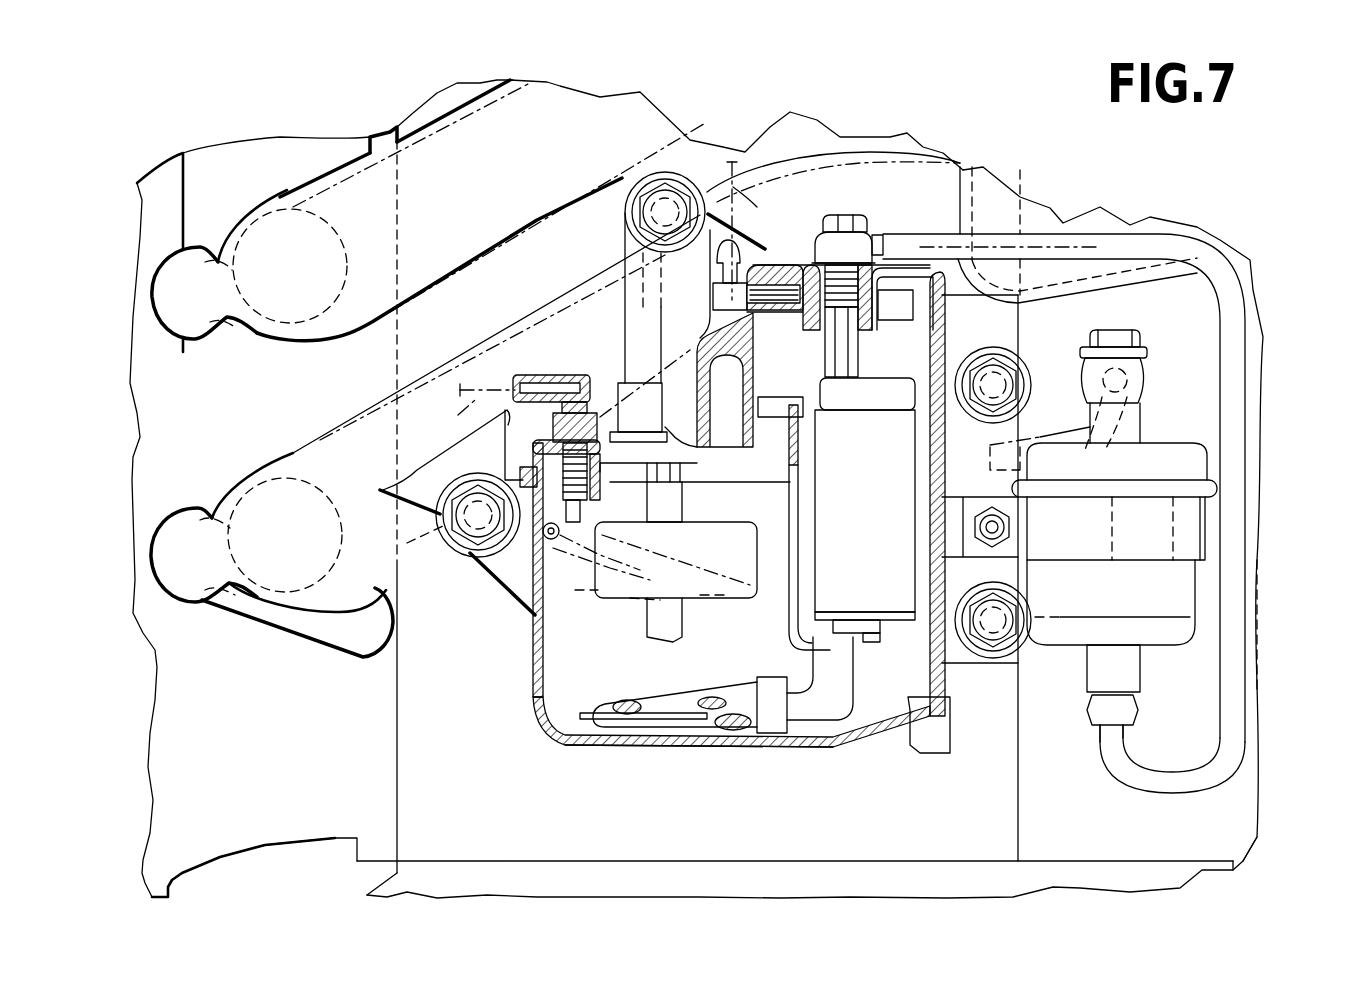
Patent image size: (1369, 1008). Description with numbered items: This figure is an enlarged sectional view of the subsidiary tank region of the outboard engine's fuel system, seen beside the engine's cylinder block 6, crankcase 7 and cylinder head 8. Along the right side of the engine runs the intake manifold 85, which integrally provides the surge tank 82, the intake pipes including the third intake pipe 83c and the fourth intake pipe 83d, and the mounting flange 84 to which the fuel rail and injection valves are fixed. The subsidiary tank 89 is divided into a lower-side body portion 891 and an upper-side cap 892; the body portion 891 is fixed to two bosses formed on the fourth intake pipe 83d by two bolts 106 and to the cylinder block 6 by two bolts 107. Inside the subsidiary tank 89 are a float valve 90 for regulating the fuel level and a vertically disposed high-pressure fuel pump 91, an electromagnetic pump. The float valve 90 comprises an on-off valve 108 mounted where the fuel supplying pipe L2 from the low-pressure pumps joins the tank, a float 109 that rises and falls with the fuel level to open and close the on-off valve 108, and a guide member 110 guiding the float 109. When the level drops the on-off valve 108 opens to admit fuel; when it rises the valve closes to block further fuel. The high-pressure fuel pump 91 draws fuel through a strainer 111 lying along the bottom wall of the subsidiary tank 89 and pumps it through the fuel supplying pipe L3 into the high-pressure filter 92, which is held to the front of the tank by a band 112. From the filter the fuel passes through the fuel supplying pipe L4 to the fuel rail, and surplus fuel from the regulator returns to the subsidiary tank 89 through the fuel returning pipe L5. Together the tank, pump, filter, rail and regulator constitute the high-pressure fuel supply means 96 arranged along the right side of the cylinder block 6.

The cylinder block 6 is at (817, 847).
The crankcase 7 is at (1193, 843).
The cylinder head 8 is at (302, 823).
The surge tank 82 is at (990, 177).
The third intake pipe 83c is at (483, 127).
The fourth intake pipe 83d is at (487, 365).
The mounting flange 84 is at (192, 453).
The intake manifold 85 is at (433, 118).
The subsidiary tank 89 is at (547, 710).
The body portion 891 is at (825, 740).
The cap 892 is at (943, 355).
The float valve 90 is at (583, 584).
The high-pressure fuel pump 91 is at (882, 524).
The high-pressure filter 92 is at (1180, 590).
The high-pressure fuel supply means 96 is at (897, 205).
The bolts 106 is at (653, 220).
The bolts 107 is at (1027, 370).
The on-off valve 108 is at (590, 513).
The float 109 is at (717, 535).
The guide member 110 is at (640, 613).
The strainer 111 is at (647, 707).
The band 112 is at (1187, 533).
The fuel supplying pipe L2 is at (466, 411).
The fuel supplying pipe L3 is at (1237, 437).
The fuel supplying pipe L4 is at (1068, 430).
The fuel returning pipe L5 is at (765, 231).